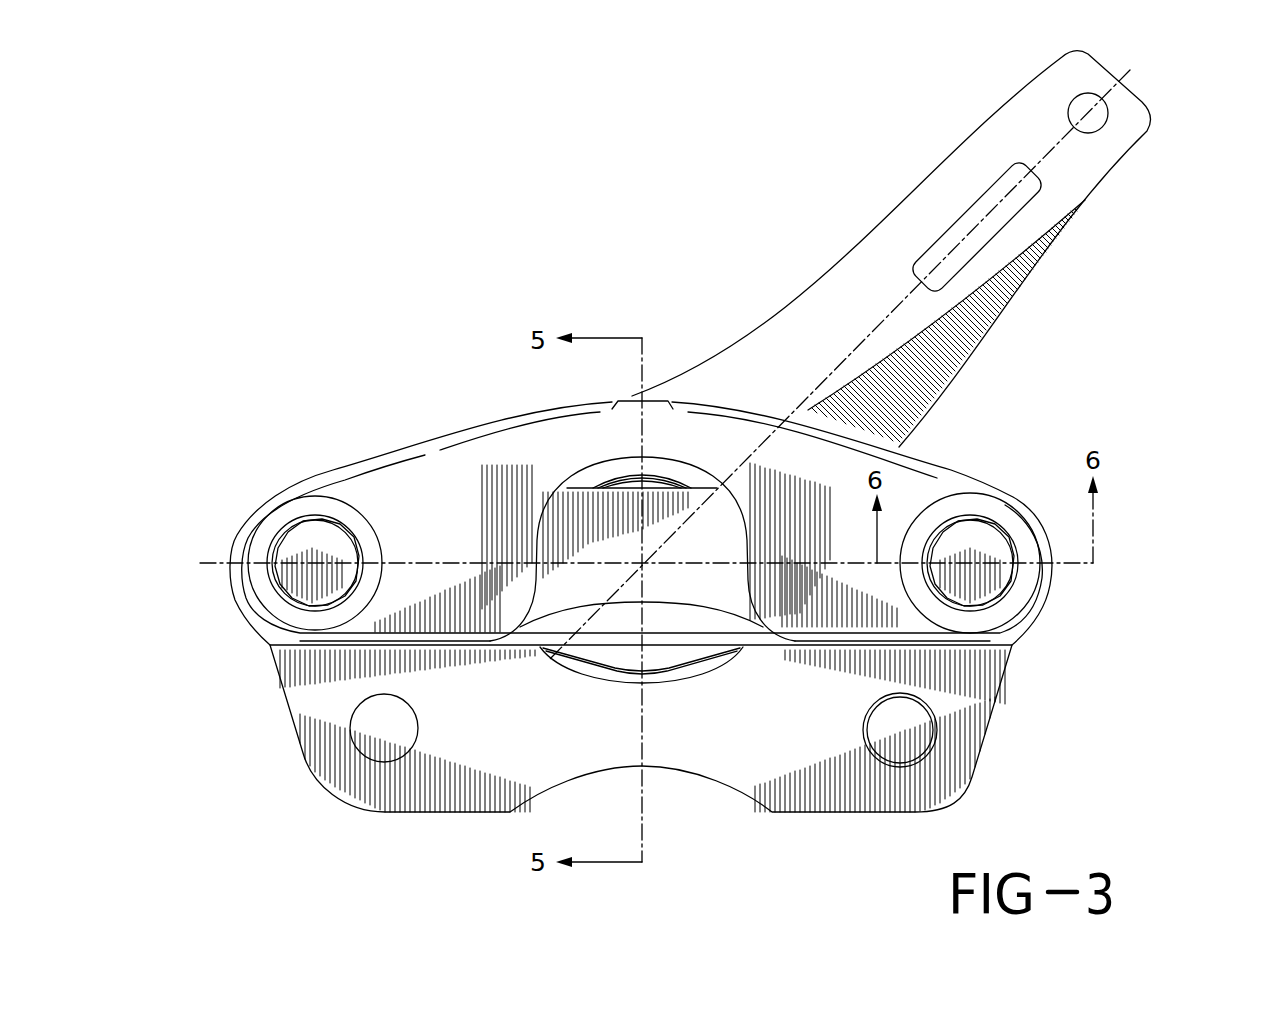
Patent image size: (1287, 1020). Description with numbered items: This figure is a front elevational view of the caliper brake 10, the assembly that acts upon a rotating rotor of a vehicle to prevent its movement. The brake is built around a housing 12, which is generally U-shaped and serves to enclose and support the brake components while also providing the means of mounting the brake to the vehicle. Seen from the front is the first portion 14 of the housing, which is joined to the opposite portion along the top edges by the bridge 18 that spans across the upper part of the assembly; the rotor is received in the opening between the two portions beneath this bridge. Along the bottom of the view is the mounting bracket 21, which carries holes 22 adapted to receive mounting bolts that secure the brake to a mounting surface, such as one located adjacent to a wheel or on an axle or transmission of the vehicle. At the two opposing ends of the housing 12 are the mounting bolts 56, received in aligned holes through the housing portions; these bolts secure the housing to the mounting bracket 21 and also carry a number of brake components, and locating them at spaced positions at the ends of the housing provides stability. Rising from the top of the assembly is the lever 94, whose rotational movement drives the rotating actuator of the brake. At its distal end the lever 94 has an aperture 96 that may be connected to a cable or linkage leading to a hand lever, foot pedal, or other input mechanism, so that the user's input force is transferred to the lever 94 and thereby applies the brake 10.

The caliper brake 10 is at (635, 189).
The housing 12 is at (362, 447).
The first portion 14 is at (412, 612).
The bridge 18 is at (497, 413).
The mounting bracket 21 is at (953, 773).
The holes 22 is at (365, 730).
The mounting bolts 56 is at (307, 545).
The lever 94 is at (980, 277).
The aperture 96 is at (1099, 126).